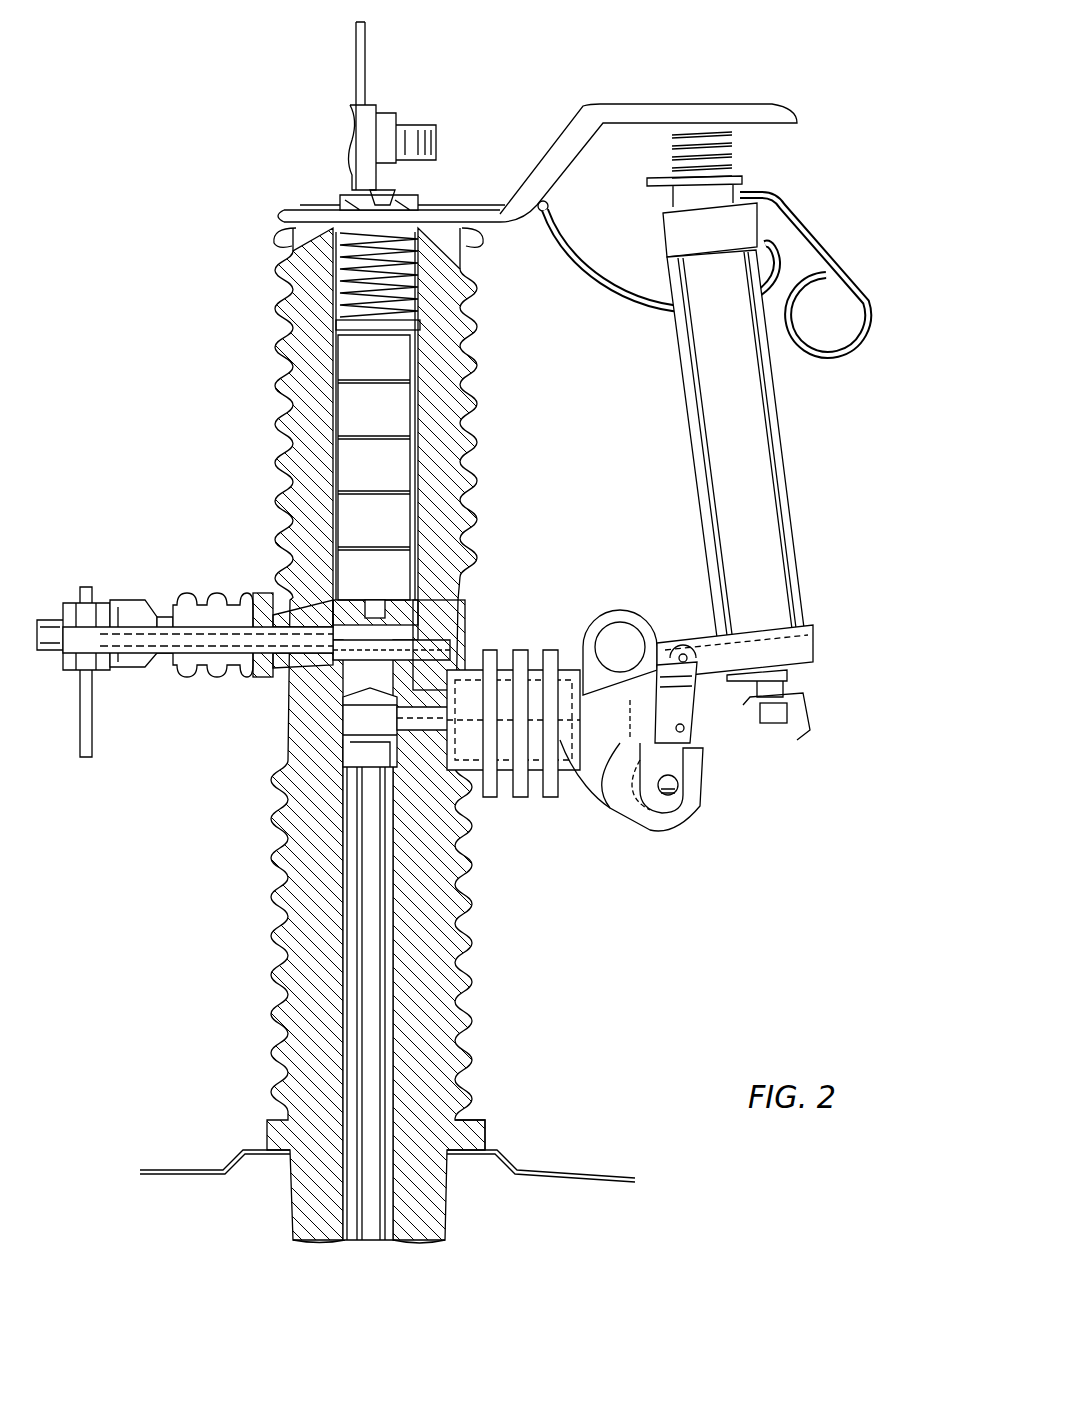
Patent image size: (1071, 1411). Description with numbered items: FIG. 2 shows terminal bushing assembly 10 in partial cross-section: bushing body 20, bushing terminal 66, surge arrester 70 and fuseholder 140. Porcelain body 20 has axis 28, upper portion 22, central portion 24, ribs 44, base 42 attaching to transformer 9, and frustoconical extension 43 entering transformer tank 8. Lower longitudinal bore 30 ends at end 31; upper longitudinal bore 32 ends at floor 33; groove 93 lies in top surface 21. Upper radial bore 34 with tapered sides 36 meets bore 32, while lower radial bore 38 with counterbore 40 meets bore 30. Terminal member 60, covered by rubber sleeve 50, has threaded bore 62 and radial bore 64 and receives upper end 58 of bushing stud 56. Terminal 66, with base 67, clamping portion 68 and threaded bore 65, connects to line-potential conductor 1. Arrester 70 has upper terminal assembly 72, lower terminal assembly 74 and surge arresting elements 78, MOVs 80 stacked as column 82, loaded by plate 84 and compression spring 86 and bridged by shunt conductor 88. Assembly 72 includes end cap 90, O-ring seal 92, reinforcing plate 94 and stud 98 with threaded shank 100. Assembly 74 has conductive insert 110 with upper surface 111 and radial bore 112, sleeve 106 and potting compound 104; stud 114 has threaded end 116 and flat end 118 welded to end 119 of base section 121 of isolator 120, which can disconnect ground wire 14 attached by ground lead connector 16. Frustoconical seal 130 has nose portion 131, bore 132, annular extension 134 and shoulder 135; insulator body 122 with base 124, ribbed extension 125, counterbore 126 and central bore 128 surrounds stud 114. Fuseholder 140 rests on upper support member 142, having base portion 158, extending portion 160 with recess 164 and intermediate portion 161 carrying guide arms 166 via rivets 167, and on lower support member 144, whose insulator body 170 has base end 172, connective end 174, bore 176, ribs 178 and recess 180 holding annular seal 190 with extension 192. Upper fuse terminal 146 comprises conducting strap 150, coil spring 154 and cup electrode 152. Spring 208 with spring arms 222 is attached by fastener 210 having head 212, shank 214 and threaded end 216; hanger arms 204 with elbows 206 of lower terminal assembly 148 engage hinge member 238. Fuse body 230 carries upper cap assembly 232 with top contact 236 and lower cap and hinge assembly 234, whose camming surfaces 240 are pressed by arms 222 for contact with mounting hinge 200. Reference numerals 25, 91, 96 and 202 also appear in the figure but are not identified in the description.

The line-potential conductor 1 is at (355, 30).
The transformer tank 8 is at (502, 1247).
The transformer 9 is at (515, 1168).
The terminal bushing assembly 10 is at (224, 250).
The ground wire 14 is at (78, 742).
The ground lead connector 16 is at (73, 605).
The bushing body 20 is at (478, 408).
The top surface 21 is at (305, 232).
The upper portion 22 is at (482, 472).
The central portion 24 is at (530, 610).
The lower insulator section 25 is at (470, 975).
The central longitudinal axis 28 is at (378, 95).
The lower longitudinal bore 30 is at (345, 935).
The end 31 is at (282, 780).
The upper longitudinal bore 32 is at (455, 358).
The floor 33 is at (465, 650).
The upper radial bore 34 is at (330, 600).
The inwardly tapered sides 36 is at (310, 590).
The lower radial bore 38 is at (405, 735).
The counterbore 40 is at (468, 862).
The base 42 is at (475, 1130).
The frustoconical extension 43 is at (296, 1208).
The ribs 44 is at (478, 300).
The pliant rubber sleeve 50 is at (390, 770).
The bushing stud 56 is at (345, 905).
The upper end 58 is at (345, 880).
The terminal member 60 is at (320, 790).
The threaded longitudinal bore 62 is at (330, 800).
The radial bore 64 is at (290, 780).
The central threaded bore 65 is at (400, 190).
The bushing terminal 66 is at (345, 110).
The base 67 is at (420, 205).
The clamping portion 68 is at (390, 120).
The surge arrester 70 is at (430, 448).
The upper terminal assembly 72 is at (262, 205).
The lower terminal assembly 74 is at (225, 585).
The surge arresting elements 78 is at (425, 524).
The metal oxide varistors 80 is at (369, 586).
The column 82 is at (336, 362).
The conductive plate 84 is at (425, 327).
The compression spring 86 is at (395, 350).
The shunt conductor 88 is at (340, 280).
The end cap 90 is at (300, 205).
The cover base plate 91 is at (487, 200).
The O-ring seal 92 is at (486, 237).
The groove 93 is at (480, 250).
The reinforcing plate 94 is at (478, 272).
The washer 96 is at (345, 210).
The conductive stud 98 is at (379, 275).
The threaded shank 100 is at (355, 205).
The urethane potting compound 104 is at (300, 720).
The pliant rubber sleeve 106 is at (300, 560).
The conductive insert 110 is at (470, 600).
The flat upper surface 111 is at (455, 590).
The internally threaded radial bore 112 is at (480, 620).
The stud 114 is at (378, 600).
The threaded end 116 is at (405, 642).
The flat end 118 is at (170, 612).
The end 119 is at (162, 660).
The isolator 120 is at (145, 600).
The metallic base section 121 is at (128, 665).
The insulator body 122 is at (200, 680).
The base 124 is at (228, 566).
The ribbed extension 125 is at (188, 680).
The counterbore 126 is at (262, 600).
The central bore 128 is at (202, 600).
The frustoconical seal 130 is at (290, 668).
The nose portion 131 is at (300, 672).
The central longitudinal bore 132 is at (290, 700).
The annular extension 134 is at (232, 680).
The shoulder 135 is at (248, 680).
The fuseholder 140 is at (677, 387).
The upper support member 142 is at (633, 104).
The lower support member 144 is at (535, 640).
The upper fuse terminal 146 is at (797, 90).
The lower terminal assembly 148 is at (660, 832).
The conducting strap 150 is at (742, 104).
The cup electrode 152 is at (650, 186).
The coil spring 154 is at (672, 148).
The base portion 158 is at (528, 162).
The extending portion 160 is at (680, 104).
The intermediate portion 161 is at (572, 122).
The recess 164 is at (798, 122).
The load break guide arms 166 is at (600, 265).
The rivets 167 is at (550, 208).
The insulator body 170 is at (612, 615).
The base end 172 is at (490, 800).
The connective end 174 is at (578, 790).
The central longitudinal bore 176 is at (552, 800).
The ribs 178 is at (520, 610).
The recess 180 is at (480, 800).
The annular seal 190 is at (485, 650).
The annular extension 192 is at (478, 718).
The mounting hinge 200 is at (700, 805).
The latch arm 202 is at (686, 620).
The hanger arms 204 is at (695, 785).
The elbows 206 is at (680, 805).
The lower current interchange spring 208 is at (612, 805).
The fastener 210 is at (693, 744).
The head 212 is at (690, 659).
The shank 214 is at (522, 800).
The threaded end 216 is at (397, 700).
The spring arms 222 is at (640, 830).
The fuse body 230 is at (775, 455).
The upper cap assembly 232 is at (765, 192).
The lower cap and hinge assembly 234 is at (712, 600).
The top contact 236 is at (680, 222).
The conducting hinge member 238 is at (748, 712).
The camming surfaces 240 is at (660, 835).